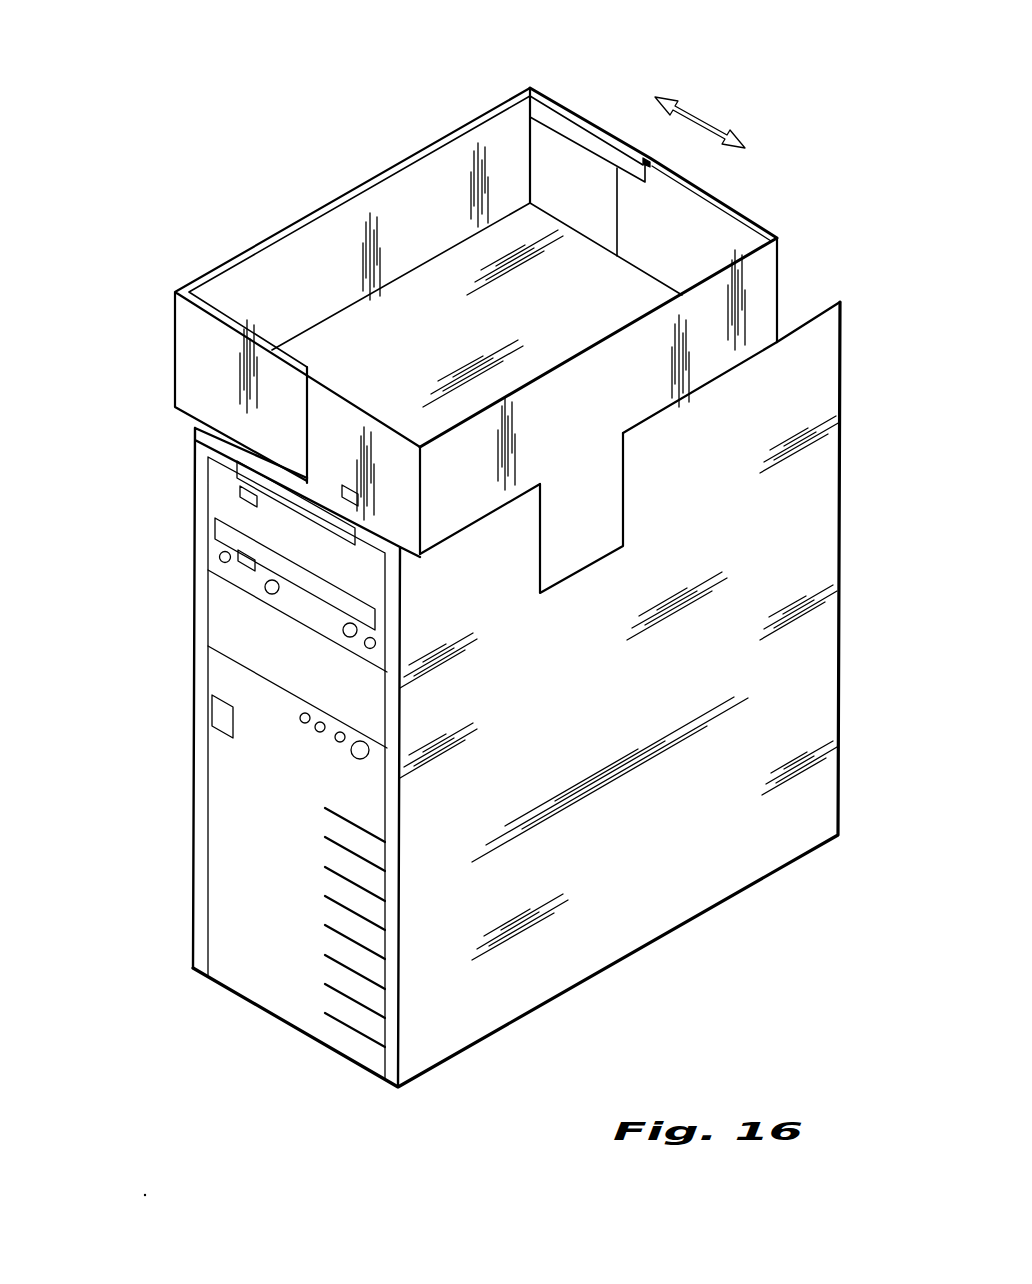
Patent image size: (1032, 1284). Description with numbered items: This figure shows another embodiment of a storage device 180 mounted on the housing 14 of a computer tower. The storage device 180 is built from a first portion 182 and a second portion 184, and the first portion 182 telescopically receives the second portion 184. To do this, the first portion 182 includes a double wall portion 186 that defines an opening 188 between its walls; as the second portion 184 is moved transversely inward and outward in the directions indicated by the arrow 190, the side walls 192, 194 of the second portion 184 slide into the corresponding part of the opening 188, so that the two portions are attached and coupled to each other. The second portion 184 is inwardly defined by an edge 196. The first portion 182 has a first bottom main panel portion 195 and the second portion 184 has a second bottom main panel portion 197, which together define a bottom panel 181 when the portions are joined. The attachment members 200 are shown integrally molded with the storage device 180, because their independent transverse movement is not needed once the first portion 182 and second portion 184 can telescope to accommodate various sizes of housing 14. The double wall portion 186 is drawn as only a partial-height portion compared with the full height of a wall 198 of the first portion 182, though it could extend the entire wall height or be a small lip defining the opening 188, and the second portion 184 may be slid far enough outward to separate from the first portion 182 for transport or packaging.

The housing 14 is at (240, 850).
The storage device 180 is at (163, 290).
The bottom panel 181 is at (417, 293).
The first portion 182 is at (315, 207).
The second portion 184 is at (717, 205).
The double wall portion 186 is at (557, 120).
The opening 188 is at (305, 377).
The arrow 190 is at (697, 112).
The side wall 192 is at (313, 463).
The side wall 194 is at (725, 238).
The first bottom main panel portion 195 is at (270, 290).
The edge 196 is at (520, 310).
The second bottom main panel portion 197 is at (620, 307).
The wall 198 is at (190, 322).
The attachment members 200 is at (593, 538).